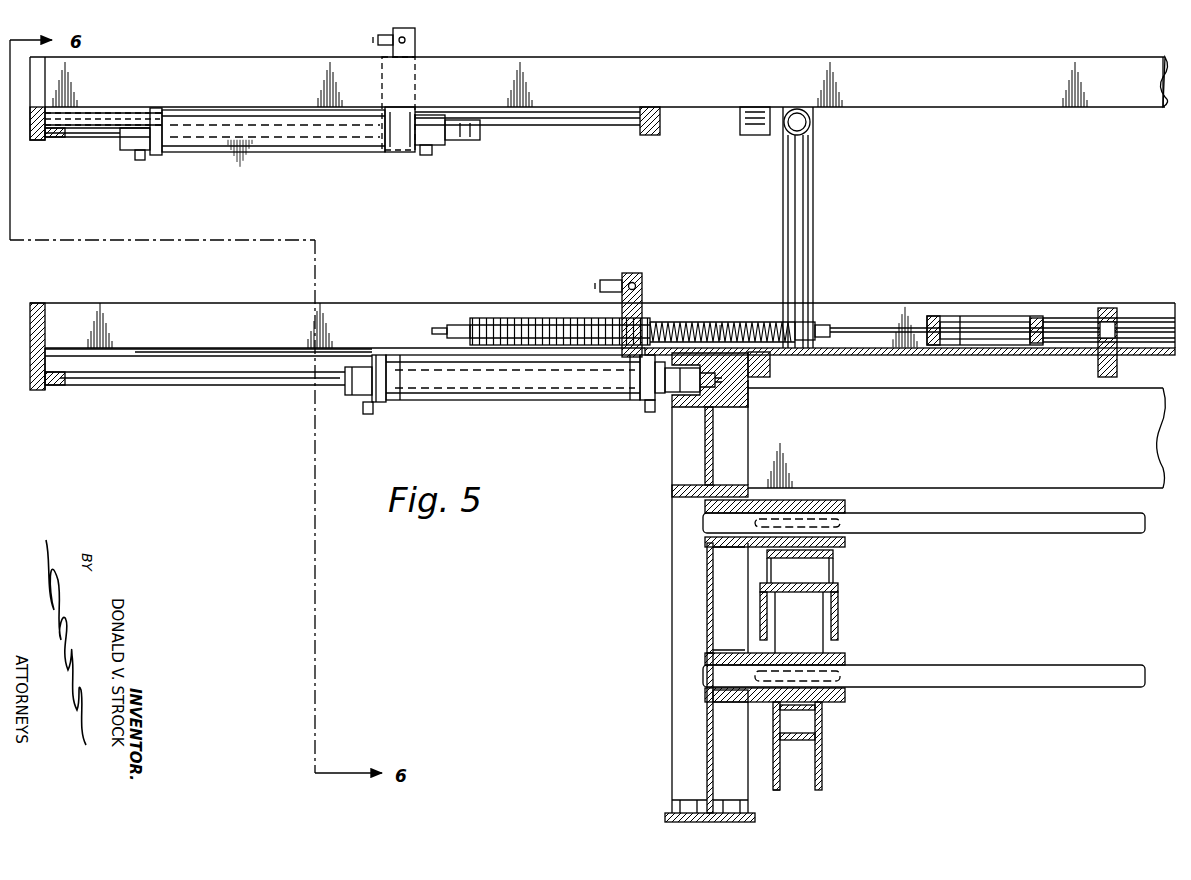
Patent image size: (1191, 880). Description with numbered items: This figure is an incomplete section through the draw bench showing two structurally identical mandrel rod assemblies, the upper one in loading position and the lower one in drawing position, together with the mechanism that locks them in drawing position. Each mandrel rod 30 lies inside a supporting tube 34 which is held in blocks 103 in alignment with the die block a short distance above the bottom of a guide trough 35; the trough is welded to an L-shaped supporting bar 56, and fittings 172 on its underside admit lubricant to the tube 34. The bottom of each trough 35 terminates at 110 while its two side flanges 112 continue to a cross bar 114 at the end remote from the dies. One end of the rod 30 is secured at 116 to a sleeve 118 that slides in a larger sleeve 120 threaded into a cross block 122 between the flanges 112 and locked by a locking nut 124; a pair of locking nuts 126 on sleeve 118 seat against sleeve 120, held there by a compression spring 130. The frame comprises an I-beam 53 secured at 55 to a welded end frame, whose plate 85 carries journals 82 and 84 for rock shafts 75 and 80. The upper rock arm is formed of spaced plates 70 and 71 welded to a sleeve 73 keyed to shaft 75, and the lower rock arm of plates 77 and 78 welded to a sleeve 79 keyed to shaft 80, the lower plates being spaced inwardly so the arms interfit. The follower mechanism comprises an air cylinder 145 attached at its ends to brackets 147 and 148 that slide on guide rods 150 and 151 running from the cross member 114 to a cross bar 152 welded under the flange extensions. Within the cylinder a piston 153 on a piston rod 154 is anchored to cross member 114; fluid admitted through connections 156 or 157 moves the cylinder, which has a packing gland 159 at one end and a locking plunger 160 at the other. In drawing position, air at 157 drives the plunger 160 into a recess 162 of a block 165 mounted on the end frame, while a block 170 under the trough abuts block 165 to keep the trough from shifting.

The mandrel rod 30 is at (870, 330).
The supporting tube 34 is at (1135, 318).
The guide trough 35 is at (915, 355).
The I-beam 53 is at (1002, 450).
The end frame 55 is at (737, 479).
The L-shaped supporting bar 56 is at (803, 202).
The plate 70 is at (838, 622).
The plate 71 is at (760, 630).
The sleeve 73 is at (847, 546).
The rock shaft 75 is at (1050, 533).
The plate 77 is at (825, 777).
The plate 78 is at (778, 788).
The sleeve 79 is at (835, 702).
The rock shaft 80 is at (1038, 687).
The journal 82 is at (715, 543).
The journal 84 is at (720, 705).
The plate 85 is at (708, 737).
The block 103 is at (1111, 310).
The trough bottom termination 110 is at (678, 322).
The side flange 112 is at (713, 50).
The cross bar 114 is at (40, 140).
The securing point 116 is at (803, 318).
The sleeve 118 is at (743, 322).
The sleeve 120 is at (538, 318).
The cross block 122 is at (415, 50).
The locking nut 124 is at (587, 318).
The locking nuts 126 is at (490, 323).
The compression spring 130 is at (723, 326).
The air cylinder 145 is at (292, 150).
The bracket 147 is at (372, 400).
The bracket 148 is at (647, 392).
The guide rod 150 is at (105, 120).
The guide rod 151 is at (167, 358).
The cross bar 152 is at (650, 135).
The piston 153 is at (387, 154).
The piston rod 154 is at (88, 135).
The connection 156 is at (140, 160).
The connection 157 is at (425, 158).
The packing gland 159 is at (130, 150).
The locking plunger 160 is at (460, 142).
The recess 162 is at (702, 410).
The block 165 is at (748, 402).
The block 170 is at (755, 134).
The fitting 172 is at (1117, 363).